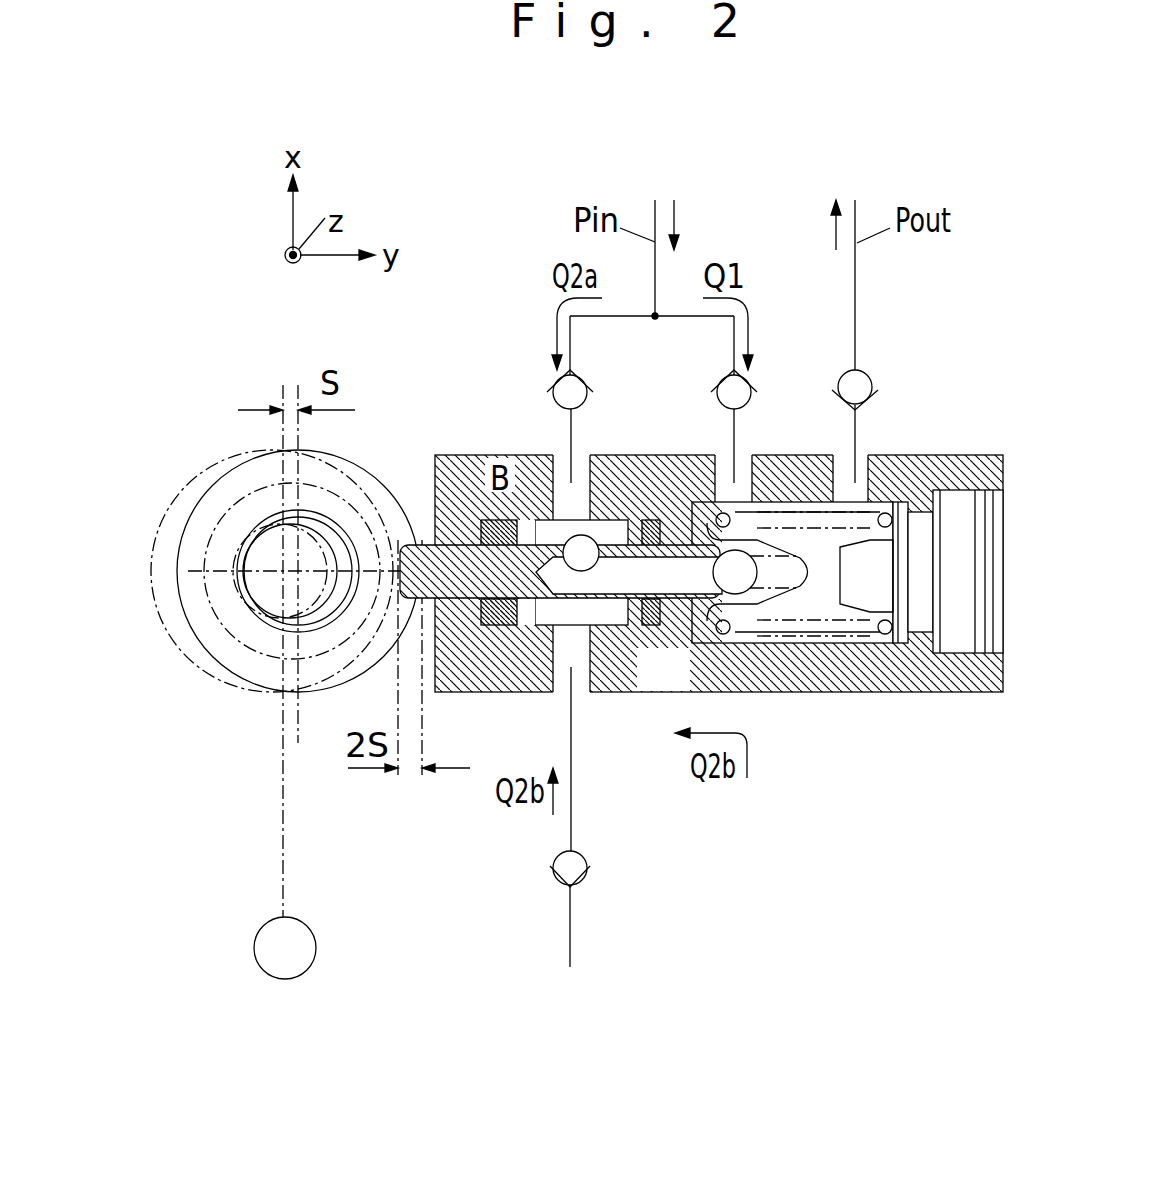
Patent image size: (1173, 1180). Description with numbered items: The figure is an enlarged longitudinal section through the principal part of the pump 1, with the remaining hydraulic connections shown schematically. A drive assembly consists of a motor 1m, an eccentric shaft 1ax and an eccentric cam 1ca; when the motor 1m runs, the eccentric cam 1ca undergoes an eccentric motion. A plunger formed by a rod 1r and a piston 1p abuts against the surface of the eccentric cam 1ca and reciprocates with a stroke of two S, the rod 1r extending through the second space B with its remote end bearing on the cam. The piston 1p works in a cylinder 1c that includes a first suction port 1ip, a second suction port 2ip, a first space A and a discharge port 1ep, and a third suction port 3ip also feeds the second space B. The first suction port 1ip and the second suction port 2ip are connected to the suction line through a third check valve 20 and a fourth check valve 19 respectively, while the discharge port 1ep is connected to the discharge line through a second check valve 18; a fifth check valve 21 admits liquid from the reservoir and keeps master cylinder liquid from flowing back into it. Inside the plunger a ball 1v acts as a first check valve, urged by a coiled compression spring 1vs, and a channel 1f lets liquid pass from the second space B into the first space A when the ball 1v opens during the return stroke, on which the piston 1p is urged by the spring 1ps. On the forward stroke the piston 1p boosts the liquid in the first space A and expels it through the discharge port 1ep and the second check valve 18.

The pump 1 is at (755, 983).
The eccentric cam 1ca is at (198, 502).
The eccentric shaft 1ax is at (268, 573).
The motor 1m is at (263, 930).
The rod 1r is at (437, 515).
The first suction port 1ip is at (582, 473).
The third suction port 3ip is at (548, 683).
The second suction port 2ip is at (748, 450).
The discharge port 1ep is at (875, 458).
The piston 1p is at (715, 523).
The ball 1v is at (735, 597).
The coiled compression spring 1vs is at (770, 597).
The channel 1f is at (607, 580).
The spring 1ps is at (830, 630).
The cylinder 1c is at (797, 600).
The first space A is at (830, 600).
The second check valve 18 is at (870, 383).
The fourth check valve 19 is at (718, 380).
The third check valve 20 is at (553, 380).
The fifth check valve 21 is at (562, 863).